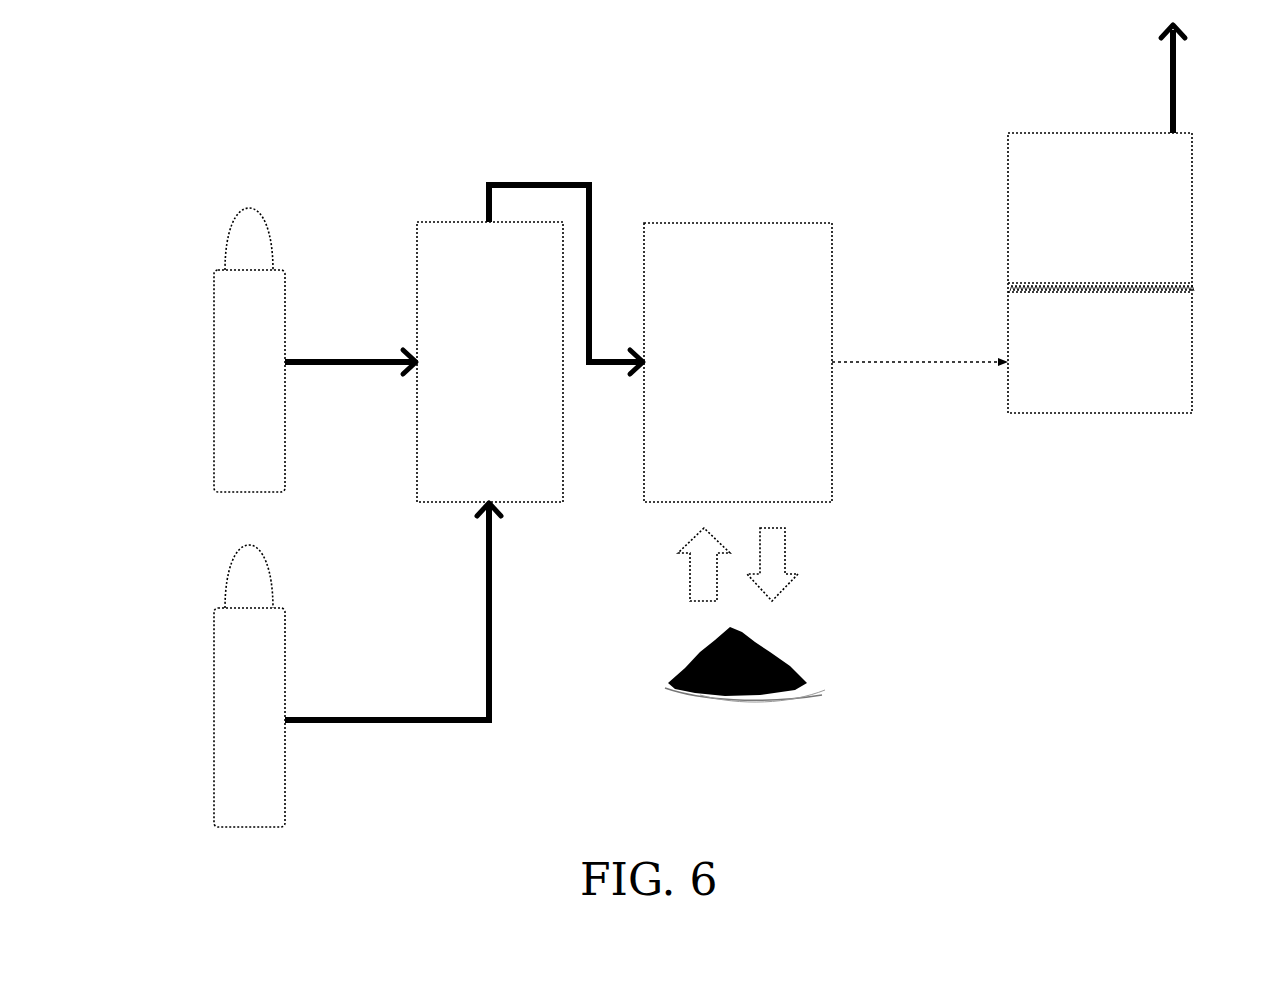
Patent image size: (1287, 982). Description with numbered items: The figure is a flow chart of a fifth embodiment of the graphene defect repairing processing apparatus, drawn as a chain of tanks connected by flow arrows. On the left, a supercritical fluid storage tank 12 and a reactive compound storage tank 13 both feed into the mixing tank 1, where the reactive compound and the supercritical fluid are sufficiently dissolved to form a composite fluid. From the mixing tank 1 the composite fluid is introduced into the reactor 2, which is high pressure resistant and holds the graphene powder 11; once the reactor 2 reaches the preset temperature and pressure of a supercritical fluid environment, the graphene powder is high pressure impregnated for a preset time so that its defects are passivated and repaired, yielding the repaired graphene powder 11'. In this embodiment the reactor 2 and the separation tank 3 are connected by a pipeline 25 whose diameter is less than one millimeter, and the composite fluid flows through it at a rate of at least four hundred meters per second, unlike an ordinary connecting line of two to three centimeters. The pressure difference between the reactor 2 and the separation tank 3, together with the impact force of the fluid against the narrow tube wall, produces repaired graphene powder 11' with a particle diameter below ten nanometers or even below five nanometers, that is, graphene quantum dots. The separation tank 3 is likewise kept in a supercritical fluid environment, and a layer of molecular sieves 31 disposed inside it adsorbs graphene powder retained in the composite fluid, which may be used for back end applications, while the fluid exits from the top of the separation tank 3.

The mixing tank 1 is at (481, 262).
The reactor 2 is at (732, 262).
The separation tank 3 is at (1092, 169).
The graphene powder 11 is at (682, 651).
The repaired graphene powder 11' is at (745, 664).
The supercritical fluid storage tank 12 is at (247, 228).
The reactive compound storage tank 13 is at (240, 574).
The pipeline 25 is at (893, 362).
The molecular sieves 31 is at (1192, 287).